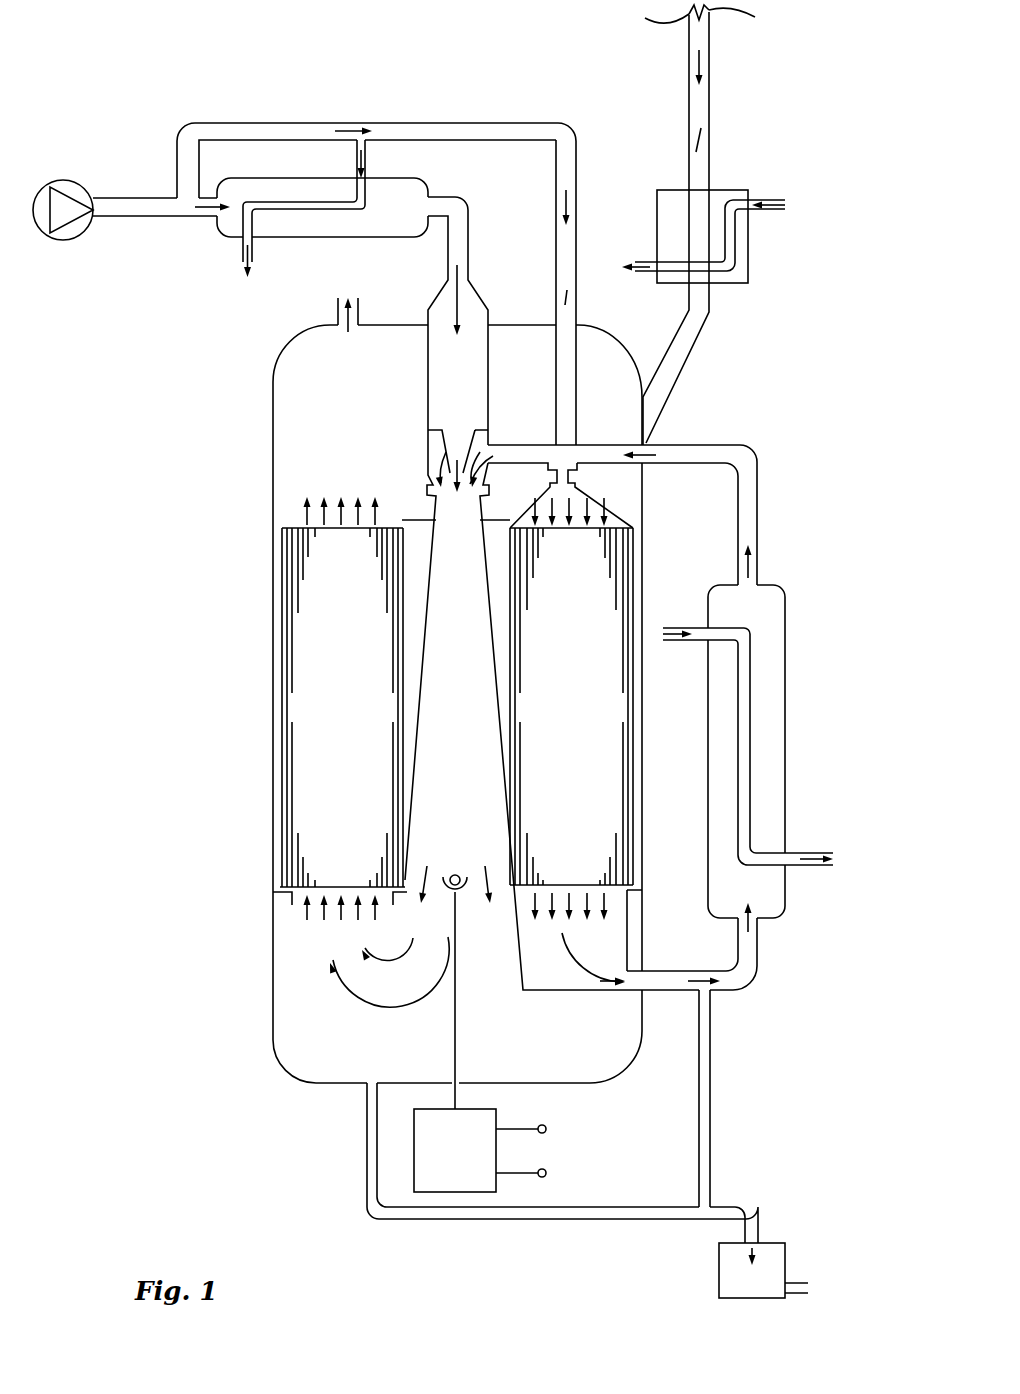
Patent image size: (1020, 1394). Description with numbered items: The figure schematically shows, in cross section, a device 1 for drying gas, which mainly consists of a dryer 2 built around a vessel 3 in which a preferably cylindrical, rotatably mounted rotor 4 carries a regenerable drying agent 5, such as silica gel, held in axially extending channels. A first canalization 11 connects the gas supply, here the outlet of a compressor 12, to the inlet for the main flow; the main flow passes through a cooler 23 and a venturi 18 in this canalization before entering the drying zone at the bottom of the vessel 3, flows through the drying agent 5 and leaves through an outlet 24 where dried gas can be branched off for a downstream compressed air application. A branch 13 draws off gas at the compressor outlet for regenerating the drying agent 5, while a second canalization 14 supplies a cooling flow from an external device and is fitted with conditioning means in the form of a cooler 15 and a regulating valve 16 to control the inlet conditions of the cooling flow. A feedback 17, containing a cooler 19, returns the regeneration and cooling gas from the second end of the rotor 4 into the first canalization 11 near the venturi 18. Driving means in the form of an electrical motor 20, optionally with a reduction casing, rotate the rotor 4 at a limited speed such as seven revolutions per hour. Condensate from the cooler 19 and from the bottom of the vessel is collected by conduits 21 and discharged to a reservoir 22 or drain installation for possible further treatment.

The device 1 is at (158, 90).
The dryer 2 is at (253, 349).
The vessel 3 is at (273, 480).
The rotor 4 is at (297, 570).
The drying agent 5 is at (325, 752).
The first canalization 11 is at (450, 207).
The compressor 12 is at (63, 186).
The branch 13 is at (570, 138).
The second canalization 14 is at (672, 368).
The cooler 15 is at (740, 278).
The regulating valve 16 is at (702, 130).
The feedback 17 is at (758, 495).
The venturi 18 is at (428, 433).
The cooler 19 is at (765, 722).
The electrical motor 20 is at (476, 1151).
The conduits 21 is at (657, 1213).
The reservoir 22 is at (738, 1275).
The cooler 23 is at (297, 226).
The outlet 24 is at (362, 318).